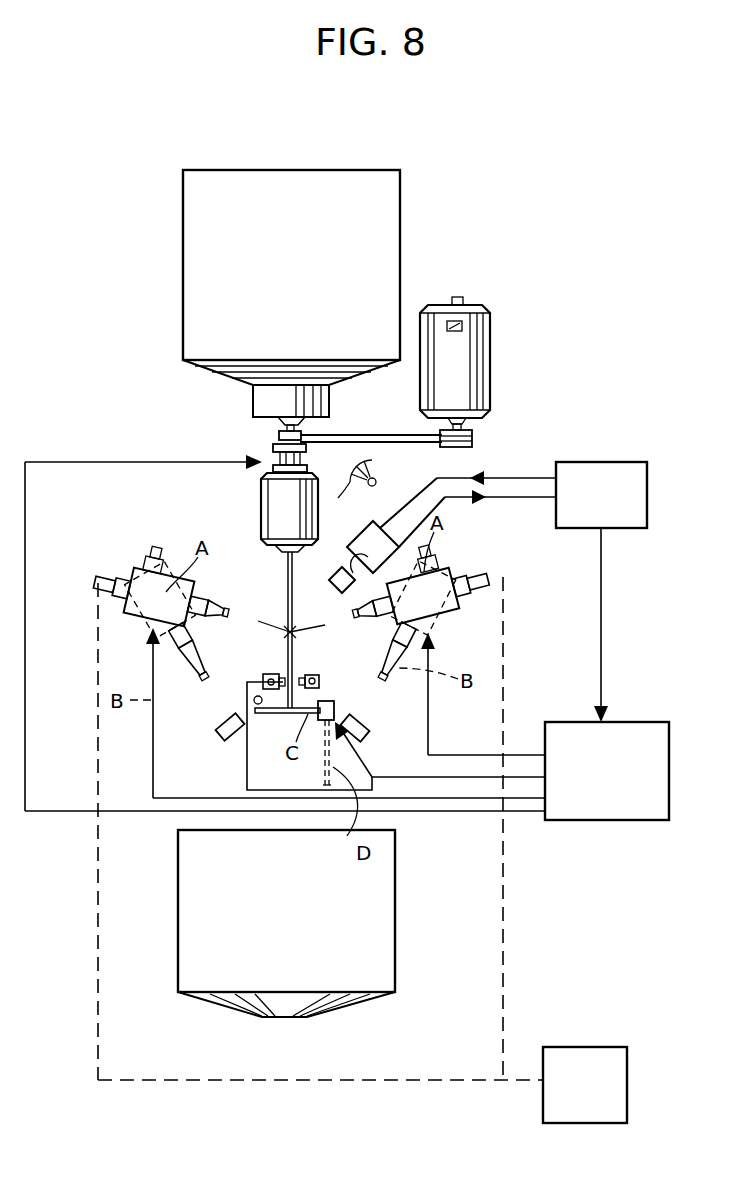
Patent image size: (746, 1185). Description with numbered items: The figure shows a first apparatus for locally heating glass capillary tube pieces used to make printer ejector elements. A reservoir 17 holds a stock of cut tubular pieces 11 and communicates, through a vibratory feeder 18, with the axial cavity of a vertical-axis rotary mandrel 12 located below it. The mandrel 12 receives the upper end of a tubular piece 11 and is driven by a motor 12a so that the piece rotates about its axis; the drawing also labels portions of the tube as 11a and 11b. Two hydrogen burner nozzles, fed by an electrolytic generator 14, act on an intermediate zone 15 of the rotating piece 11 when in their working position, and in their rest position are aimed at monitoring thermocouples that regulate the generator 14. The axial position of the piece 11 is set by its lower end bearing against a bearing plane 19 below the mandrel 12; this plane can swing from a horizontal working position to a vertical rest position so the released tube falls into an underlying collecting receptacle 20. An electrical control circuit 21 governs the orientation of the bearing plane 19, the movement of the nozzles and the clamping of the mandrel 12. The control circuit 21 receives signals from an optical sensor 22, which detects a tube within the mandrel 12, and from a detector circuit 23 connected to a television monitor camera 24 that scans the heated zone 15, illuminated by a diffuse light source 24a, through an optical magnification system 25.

The tubular piece 11 is at (280, 580).
The upper shaft portion 11a is at (293, 590).
The lower shaft portion 11b is at (300, 697).
The rotary mandrel 12 is at (266, 498).
The motor 12a is at (468, 355).
The electrolytic generator 14 is at (587, 1057).
The intermediate zone 15 is at (294, 630).
The reservoir 17 is at (237, 186).
The vibratory feeder 18 is at (276, 400).
The bearing plane 19 is at (270, 714).
The collecting receptacle 20 is at (208, 911).
The electrical control circuit 21 is at (606, 790).
The optical sensor 22 is at (274, 672).
The detector circuit 23 is at (610, 472).
The television monitor camera 24 is at (380, 533).
The diffuse light source 24a is at (377, 478).
The optical magnification system 25 is at (336, 568).